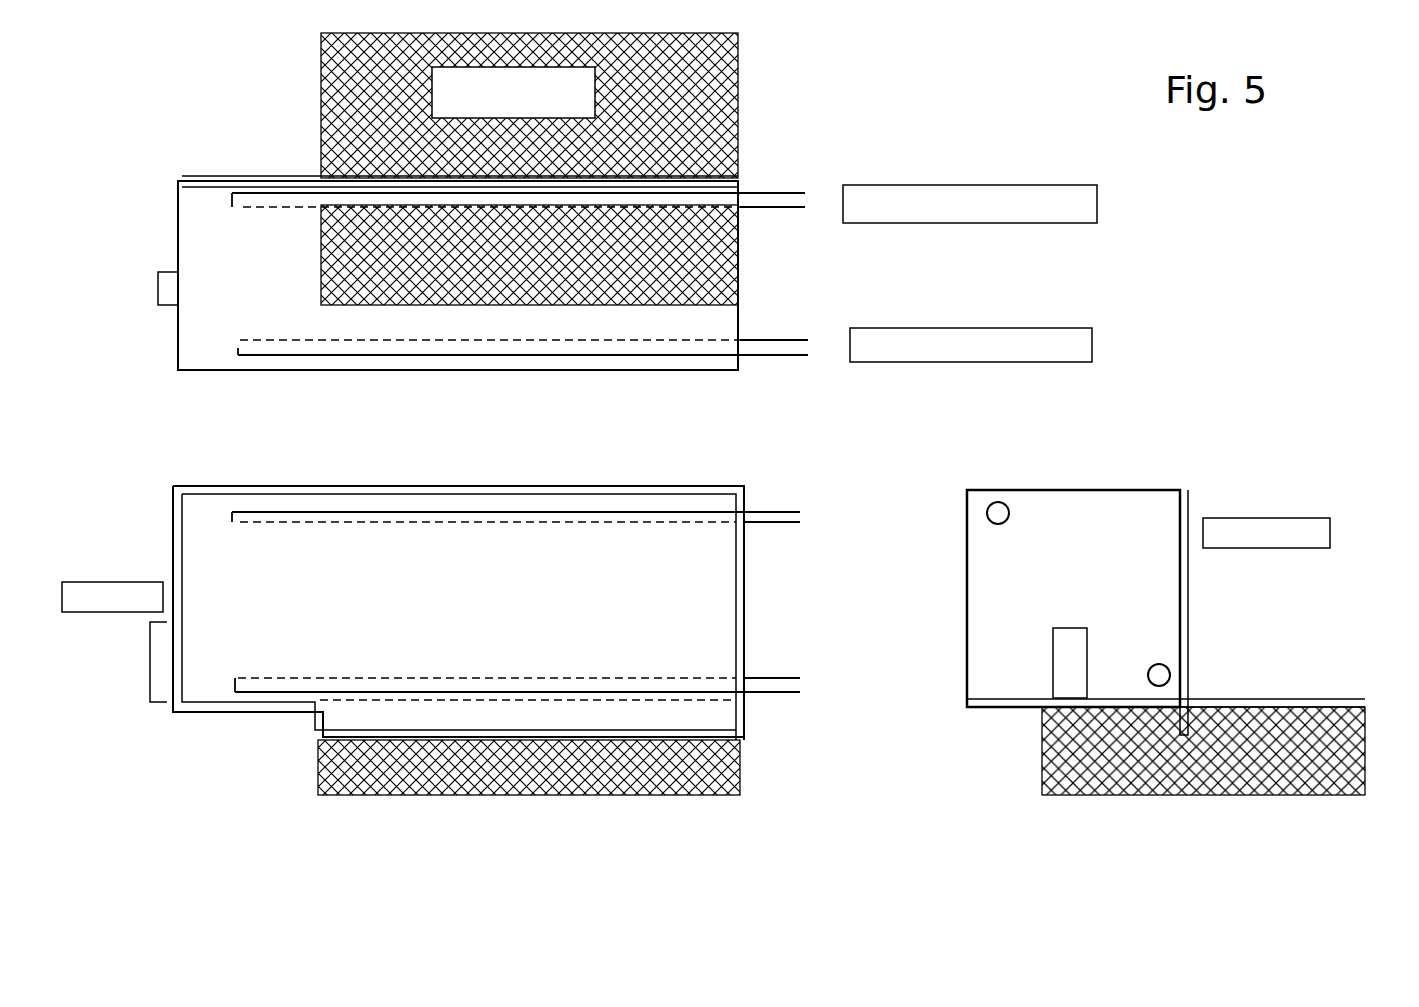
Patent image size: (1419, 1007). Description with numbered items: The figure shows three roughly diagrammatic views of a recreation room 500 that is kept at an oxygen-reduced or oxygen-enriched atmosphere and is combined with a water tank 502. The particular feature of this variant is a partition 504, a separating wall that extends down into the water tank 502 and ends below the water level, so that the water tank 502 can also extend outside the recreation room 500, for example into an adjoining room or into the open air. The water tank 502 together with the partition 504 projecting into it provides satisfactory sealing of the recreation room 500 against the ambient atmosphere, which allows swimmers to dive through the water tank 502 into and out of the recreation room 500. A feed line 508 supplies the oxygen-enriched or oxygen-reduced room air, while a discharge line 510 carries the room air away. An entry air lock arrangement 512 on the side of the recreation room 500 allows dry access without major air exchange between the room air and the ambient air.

The recreation room 500 is at (218, 543).
The water tank 502 is at (722, 112).
The partition 504 is at (340, 180).
The feed line 508 is at (812, 343).
The discharge line 510 is at (807, 193).
The entry air lock arrangement 512 is at (160, 682).